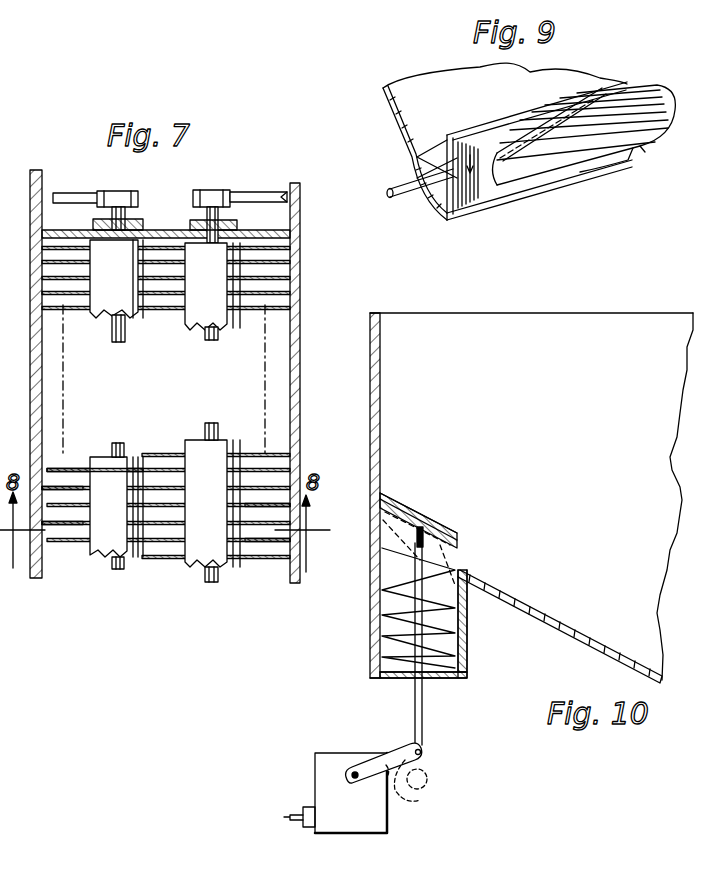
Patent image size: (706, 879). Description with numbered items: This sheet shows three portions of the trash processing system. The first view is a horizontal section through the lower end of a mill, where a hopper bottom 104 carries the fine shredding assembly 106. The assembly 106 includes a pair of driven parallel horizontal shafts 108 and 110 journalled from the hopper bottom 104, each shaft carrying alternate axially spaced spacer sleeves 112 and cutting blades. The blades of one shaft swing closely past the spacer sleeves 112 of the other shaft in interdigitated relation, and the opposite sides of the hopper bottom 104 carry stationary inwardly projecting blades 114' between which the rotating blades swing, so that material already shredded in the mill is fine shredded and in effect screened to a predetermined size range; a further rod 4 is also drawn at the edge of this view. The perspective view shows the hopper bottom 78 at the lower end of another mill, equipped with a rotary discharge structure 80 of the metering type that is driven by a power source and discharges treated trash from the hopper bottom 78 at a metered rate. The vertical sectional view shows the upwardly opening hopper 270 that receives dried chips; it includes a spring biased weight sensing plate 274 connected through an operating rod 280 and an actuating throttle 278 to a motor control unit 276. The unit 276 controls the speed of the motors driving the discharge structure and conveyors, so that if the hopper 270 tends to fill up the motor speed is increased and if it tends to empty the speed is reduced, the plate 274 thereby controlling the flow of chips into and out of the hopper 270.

In FIG. 7, the hopper bottom 104 is at (298, 372).
In FIG. 7, the fine shredding assembly 106 is at (158, 218).
In FIG. 7, the driven parallel horizontal shaft 108 is at (115, 442).
In FIG. 7, the driven parallel horizontal shaft 110 is at (210, 423).
In FIG. 7, the spacer sleeve 112 is at (103, 462).
In FIG. 7, the stationary inwardly projecting blade 114' is at (166, 551).
In FIG. 7, the rod 4 is at (53, 462).
In FIG. 9, the hopper bottom 78 is at (393, 120).
In FIG. 9, the rotary discharge structure 80 is at (420, 202).
In FIG. 10, the upwardly opening hopper 270 is at (548, 328).
In FIG. 10, the spring biased weight sensing plate 274 is at (437, 506).
In FIG. 10, the motor control unit 276 is at (333, 768).
In FIG. 10, the actuating throttle 278 is at (421, 788).
In FIG. 10, the operating rod 280 is at (423, 703).